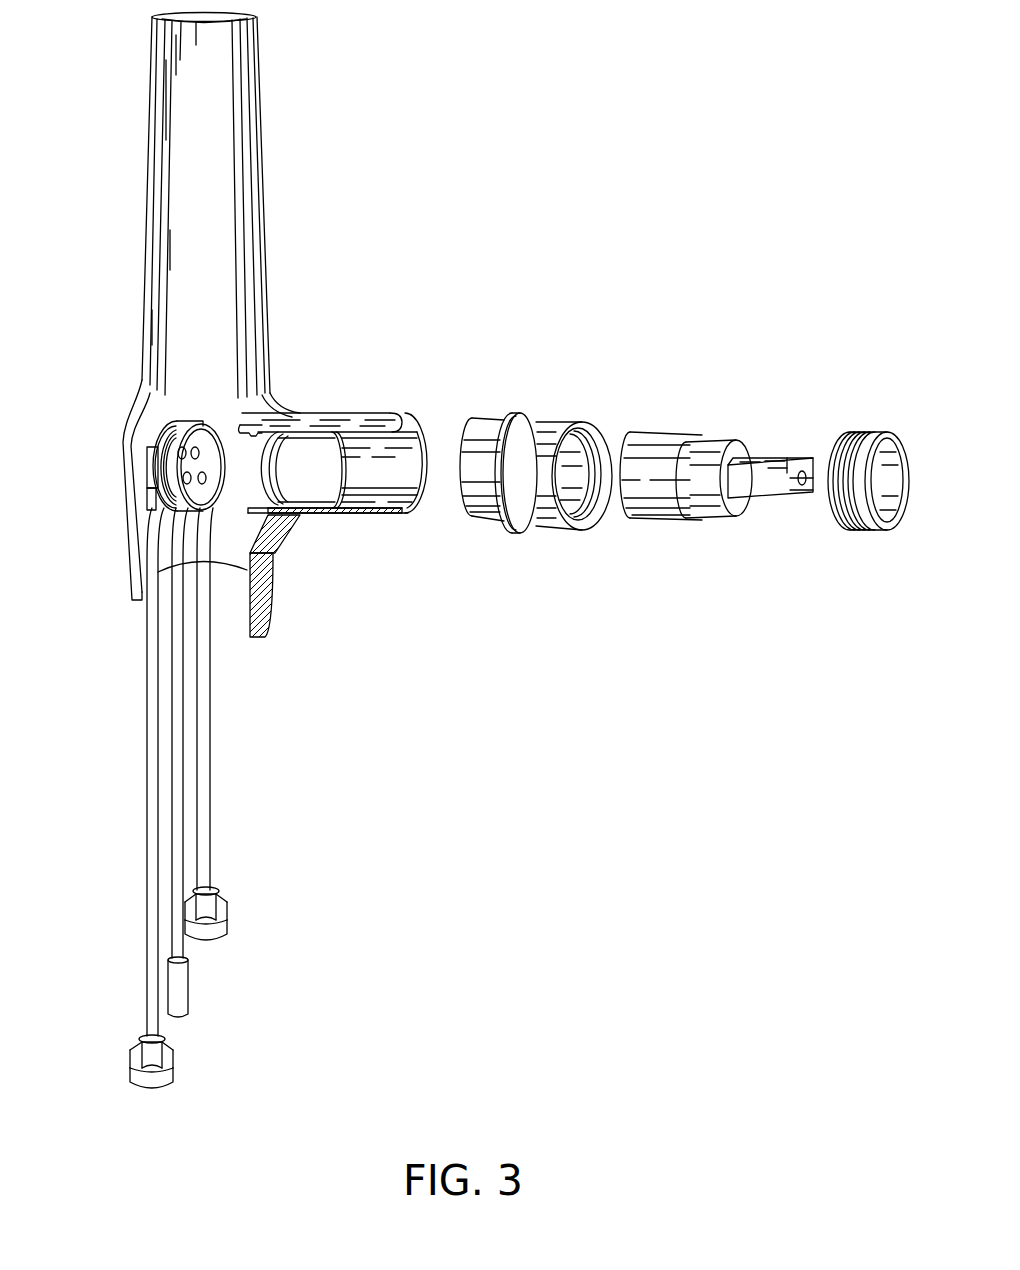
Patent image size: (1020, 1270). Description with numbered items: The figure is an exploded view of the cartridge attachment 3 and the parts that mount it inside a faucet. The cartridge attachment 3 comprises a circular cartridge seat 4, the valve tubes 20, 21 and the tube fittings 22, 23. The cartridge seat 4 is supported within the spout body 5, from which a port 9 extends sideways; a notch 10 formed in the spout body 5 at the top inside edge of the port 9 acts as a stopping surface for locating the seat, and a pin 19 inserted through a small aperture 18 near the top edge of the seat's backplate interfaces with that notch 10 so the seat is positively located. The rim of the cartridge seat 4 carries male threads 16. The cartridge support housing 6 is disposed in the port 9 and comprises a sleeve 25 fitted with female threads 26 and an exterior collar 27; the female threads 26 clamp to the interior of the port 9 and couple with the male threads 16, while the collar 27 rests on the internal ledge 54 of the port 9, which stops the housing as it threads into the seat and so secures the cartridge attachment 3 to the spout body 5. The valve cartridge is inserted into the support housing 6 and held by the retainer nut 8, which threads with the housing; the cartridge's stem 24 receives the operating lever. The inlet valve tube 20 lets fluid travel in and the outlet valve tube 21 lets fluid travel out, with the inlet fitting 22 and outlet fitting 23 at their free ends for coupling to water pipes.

The cartridge attachment 3 is at (104, 792).
The cartridge seat 4 is at (148, 500).
The spout body 5 is at (210, 150).
The cartridge support housing 6 is at (586, 376).
The retainer nut 8 is at (842, 420).
The port 9 is at (410, 470).
The notch 10 is at (260, 428).
The male threads 16 is at (153, 462).
The small aperture 18 is at (193, 425).
The pin 19 is at (183, 423).
The inlet valve tube 20 is at (210, 752).
The outlet valve tube 21 is at (183, 838).
The inlet fitting 22 is at (220, 930).
The outlet fitting 23 is at (188, 990).
The stem 24 is at (748, 490).
The sleeve 25 is at (500, 522).
The female threads 26 is at (572, 531).
The collar 27 is at (514, 413).
The internal ledge 54 is at (343, 478).